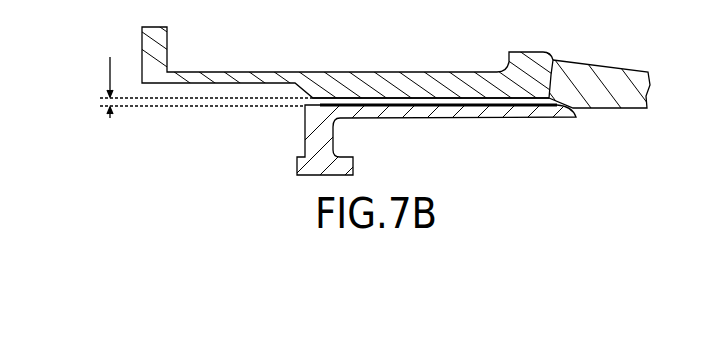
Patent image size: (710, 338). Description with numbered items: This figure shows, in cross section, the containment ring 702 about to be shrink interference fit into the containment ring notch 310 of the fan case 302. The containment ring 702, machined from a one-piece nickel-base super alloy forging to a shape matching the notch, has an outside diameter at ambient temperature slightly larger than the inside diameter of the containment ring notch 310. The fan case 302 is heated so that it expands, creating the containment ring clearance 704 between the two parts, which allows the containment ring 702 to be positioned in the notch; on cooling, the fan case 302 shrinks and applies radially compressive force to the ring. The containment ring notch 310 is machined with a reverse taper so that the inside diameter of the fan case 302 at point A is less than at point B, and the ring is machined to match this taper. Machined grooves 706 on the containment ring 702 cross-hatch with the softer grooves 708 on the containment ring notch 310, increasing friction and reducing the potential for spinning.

The containment ring notch 310 is at (442, 72).
The fan case 302 is at (598, 62).
The containment ring 702 is at (298, 160).
The containment ring clearance 704 is at (204, 74).
The grooves 706 is at (396, 106).
The grooves 708 is at (333, 97).
The point A is at (313, 97).
The point B is at (553, 60).